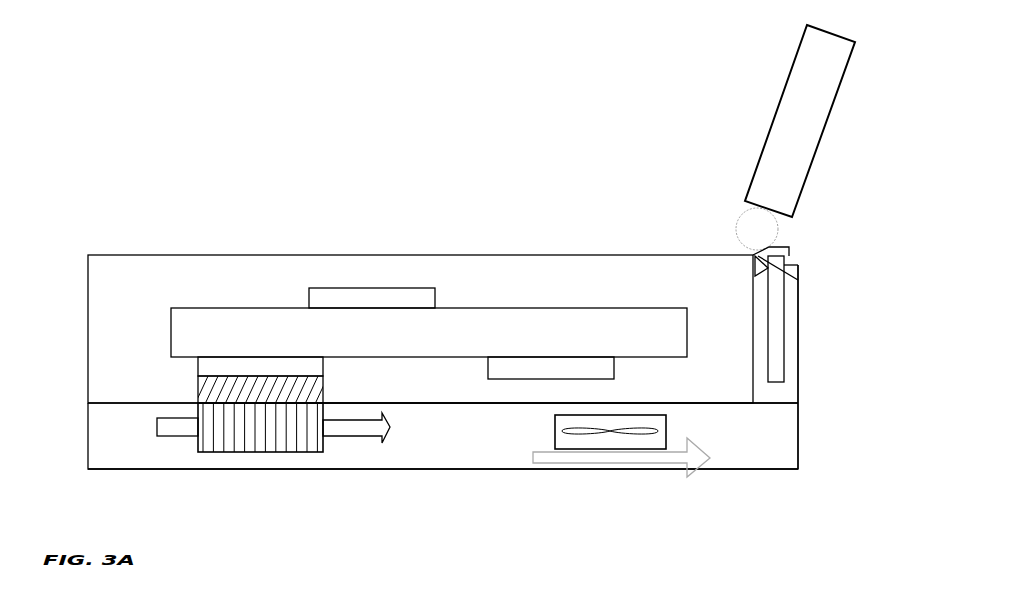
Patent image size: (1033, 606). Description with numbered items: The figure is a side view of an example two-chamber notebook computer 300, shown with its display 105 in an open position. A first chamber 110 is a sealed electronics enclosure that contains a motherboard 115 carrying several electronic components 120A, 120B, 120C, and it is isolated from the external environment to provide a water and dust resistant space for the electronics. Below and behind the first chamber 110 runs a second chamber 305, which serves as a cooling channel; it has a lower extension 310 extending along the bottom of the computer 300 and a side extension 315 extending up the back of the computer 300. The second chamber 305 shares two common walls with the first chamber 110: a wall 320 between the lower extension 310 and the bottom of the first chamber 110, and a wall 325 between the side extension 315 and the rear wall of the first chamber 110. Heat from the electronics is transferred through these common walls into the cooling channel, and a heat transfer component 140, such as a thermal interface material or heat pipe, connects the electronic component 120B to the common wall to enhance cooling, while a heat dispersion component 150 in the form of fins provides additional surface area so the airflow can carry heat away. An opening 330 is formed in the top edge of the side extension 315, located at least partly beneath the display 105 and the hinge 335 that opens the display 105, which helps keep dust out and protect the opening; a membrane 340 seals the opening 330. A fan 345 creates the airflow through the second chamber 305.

The two-chamber notebook computer 300 is at (104, 190).
The display 105 is at (776, 117).
The first chamber 110 is at (88, 336).
The motherboard 115 is at (171, 339).
The electronic component 120A is at (309, 302).
The electronic component 120B is at (325, 360).
The electronic component 120C is at (616, 360).
The heat transfer component 140 is at (197, 392).
The heat dispersion component 150 is at (262, 453).
The second chamber 305 is at (88, 441).
The lower extension 310 is at (447, 470).
The side extension 315 is at (799, 368).
The common wall 320 is at (446, 405).
The common wall 325 is at (755, 392).
The opening 330 is at (792, 262).
The hinge 335 is at (737, 232).
The membrane 340 is at (797, 281).
The fan 345 is at (555, 436).